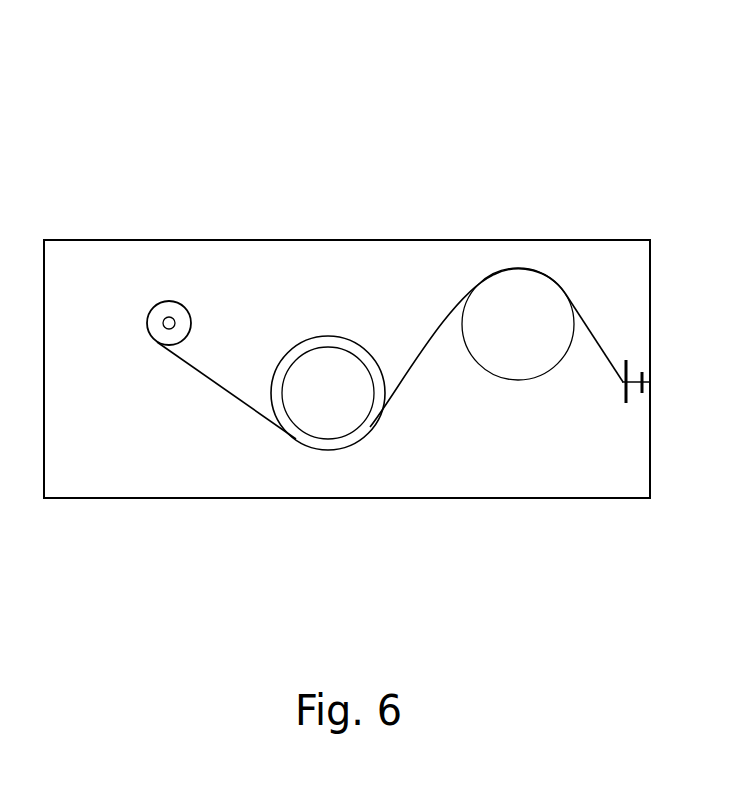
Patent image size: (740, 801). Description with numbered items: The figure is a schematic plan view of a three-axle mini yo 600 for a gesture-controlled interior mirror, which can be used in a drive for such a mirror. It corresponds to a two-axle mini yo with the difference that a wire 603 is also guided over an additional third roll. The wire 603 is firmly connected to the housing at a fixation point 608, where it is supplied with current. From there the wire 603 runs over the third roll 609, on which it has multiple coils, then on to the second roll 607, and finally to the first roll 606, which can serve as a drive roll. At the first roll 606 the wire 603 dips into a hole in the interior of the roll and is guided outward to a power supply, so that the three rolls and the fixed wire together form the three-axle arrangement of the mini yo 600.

The three-axle mini yo 600 is at (348, 97).
The wire 603 is at (225, 387).
The first roll 606 is at (155, 358).
The second roll 607 is at (335, 458).
The fixation point 608 is at (627, 413).
The third roll 609 is at (513, 397).